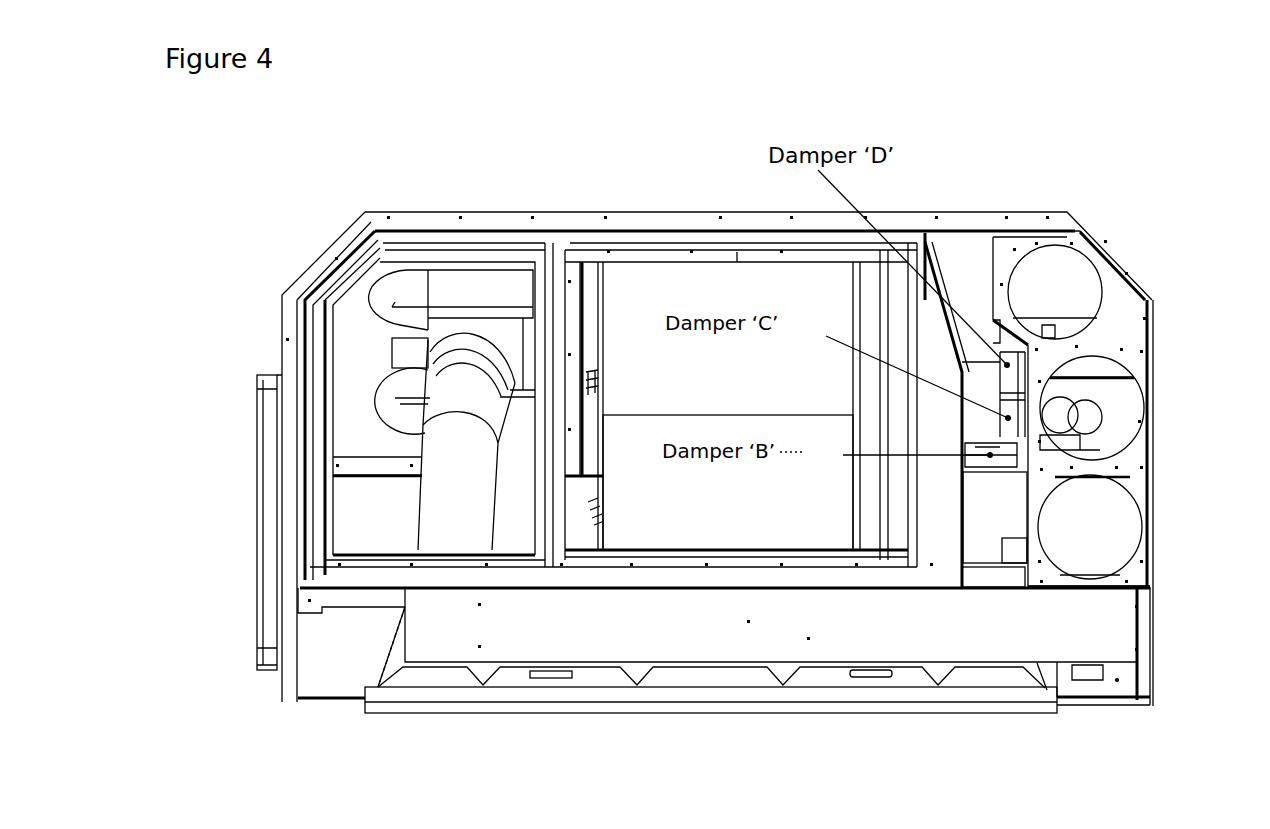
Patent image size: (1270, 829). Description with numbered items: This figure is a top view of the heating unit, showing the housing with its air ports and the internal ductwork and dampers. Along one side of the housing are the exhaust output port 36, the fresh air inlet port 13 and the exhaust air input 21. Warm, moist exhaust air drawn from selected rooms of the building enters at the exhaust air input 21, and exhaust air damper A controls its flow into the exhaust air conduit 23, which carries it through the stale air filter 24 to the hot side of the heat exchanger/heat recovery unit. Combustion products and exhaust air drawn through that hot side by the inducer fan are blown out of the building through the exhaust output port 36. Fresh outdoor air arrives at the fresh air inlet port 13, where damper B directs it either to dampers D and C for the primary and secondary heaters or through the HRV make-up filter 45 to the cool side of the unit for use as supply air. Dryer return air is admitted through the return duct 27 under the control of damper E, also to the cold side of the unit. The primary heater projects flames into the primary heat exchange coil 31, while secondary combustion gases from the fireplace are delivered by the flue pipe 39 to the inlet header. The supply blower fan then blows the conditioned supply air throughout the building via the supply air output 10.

The supply air output 10 is at (362, 432).
The fresh air inlet port 13 is at (1110, 397).
The exhaust air input 21 is at (1105, 551).
The exhaust air conduit 23 is at (450, 532).
The stale air filter 24 is at (848, 635).
The return duct 27 is at (690, 517).
The primary heat exchange coil 31 is at (450, 280).
The exhaust output port 36 is at (1087, 283).
The flue pipe 39 is at (415, 328).
The HRV make-up filter 45 is at (1008, 565).